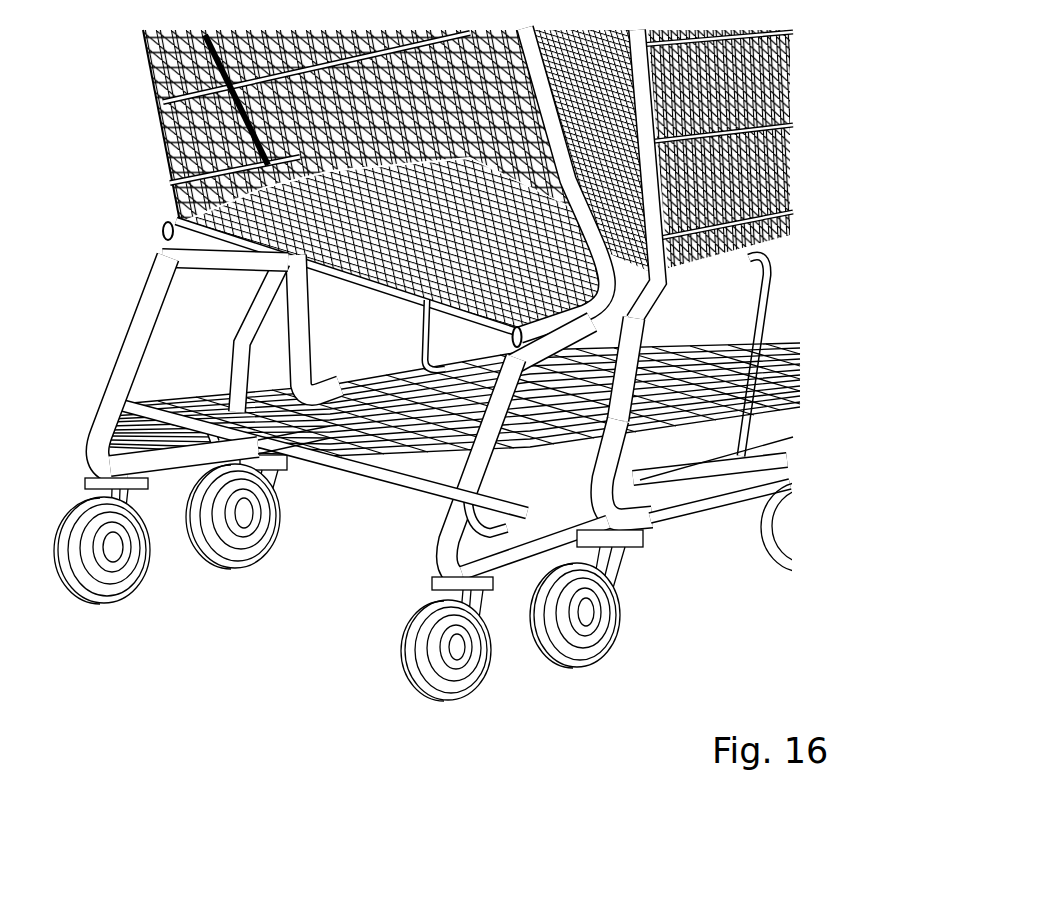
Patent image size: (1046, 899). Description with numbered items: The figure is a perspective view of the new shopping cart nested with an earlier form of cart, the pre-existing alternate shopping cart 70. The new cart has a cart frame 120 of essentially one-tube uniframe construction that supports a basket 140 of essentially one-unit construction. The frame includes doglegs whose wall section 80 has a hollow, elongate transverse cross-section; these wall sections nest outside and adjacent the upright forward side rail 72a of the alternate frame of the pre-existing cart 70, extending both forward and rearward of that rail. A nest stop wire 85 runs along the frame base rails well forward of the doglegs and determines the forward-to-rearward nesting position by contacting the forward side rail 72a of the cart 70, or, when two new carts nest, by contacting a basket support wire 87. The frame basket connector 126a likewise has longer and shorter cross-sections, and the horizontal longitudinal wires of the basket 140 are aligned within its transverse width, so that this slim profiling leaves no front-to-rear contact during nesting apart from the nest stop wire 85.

The basket 140 is at (148, 101).
The pre-existing alternate shopping cart 70 is at (103, 374).
The frame basket connector 126a is at (653, 165).
The basket support wire 87 is at (753, 361).
The nest stop wire 85 is at (373, 388).
The upright forward side rail 72a is at (610, 368).
The wall section 80 is at (613, 445).
The cart frame 120 is at (494, 556).